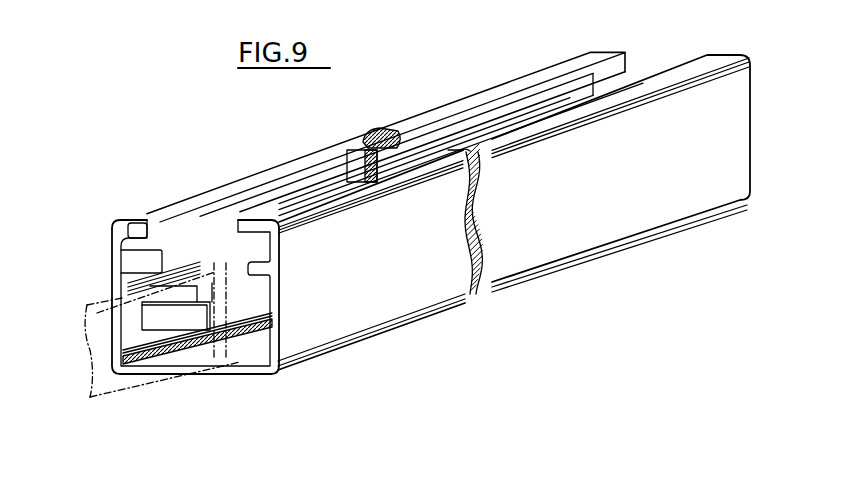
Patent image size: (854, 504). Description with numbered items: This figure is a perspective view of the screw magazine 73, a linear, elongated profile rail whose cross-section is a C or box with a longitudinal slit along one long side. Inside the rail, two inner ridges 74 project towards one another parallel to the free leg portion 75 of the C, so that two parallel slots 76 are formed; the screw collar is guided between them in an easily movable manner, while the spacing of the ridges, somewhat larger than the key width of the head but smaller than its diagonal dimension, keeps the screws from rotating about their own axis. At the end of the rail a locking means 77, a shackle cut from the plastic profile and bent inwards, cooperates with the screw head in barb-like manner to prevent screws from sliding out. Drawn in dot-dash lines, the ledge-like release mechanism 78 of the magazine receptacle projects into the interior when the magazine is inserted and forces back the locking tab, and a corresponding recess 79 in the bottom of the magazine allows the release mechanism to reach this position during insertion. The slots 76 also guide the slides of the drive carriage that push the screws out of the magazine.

The magazine 73 is at (484, 68).
The inner ridges 74 is at (127, 250).
The free leg portion 75 is at (177, 218).
The slots 76 is at (130, 220).
The locking means 77 is at (196, 322).
The release mechanism 78 is at (105, 380).
The recess 79 is at (174, 351).